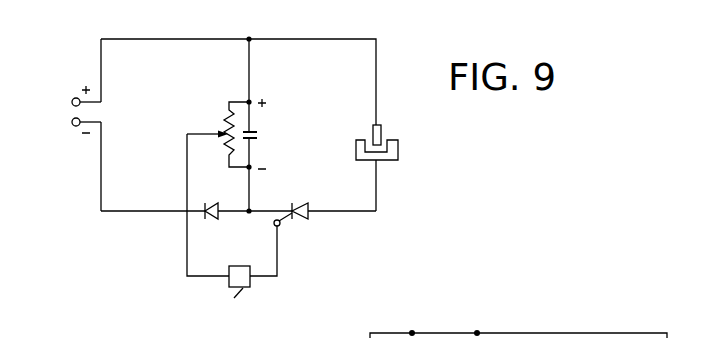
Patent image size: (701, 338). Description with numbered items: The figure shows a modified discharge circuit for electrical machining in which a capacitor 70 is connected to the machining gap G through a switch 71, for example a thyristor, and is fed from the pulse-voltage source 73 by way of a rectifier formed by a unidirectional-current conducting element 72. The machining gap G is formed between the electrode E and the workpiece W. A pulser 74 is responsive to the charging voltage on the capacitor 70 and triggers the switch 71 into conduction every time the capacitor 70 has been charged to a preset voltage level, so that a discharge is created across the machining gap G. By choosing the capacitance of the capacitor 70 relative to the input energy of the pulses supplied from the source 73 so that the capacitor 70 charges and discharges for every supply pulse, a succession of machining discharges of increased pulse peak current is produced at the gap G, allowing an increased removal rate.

The capacitor 70 is at (262, 137).
The switch 71 is at (303, 220).
The unidirectional-current conducting element 72 is at (206, 219).
The pulse-voltage source 73 is at (68, 112).
The pulser 74 is at (251, 284).
The electrode E is at (386, 133).
The machining gap G is at (389, 143).
The workpiece W is at (387, 161).